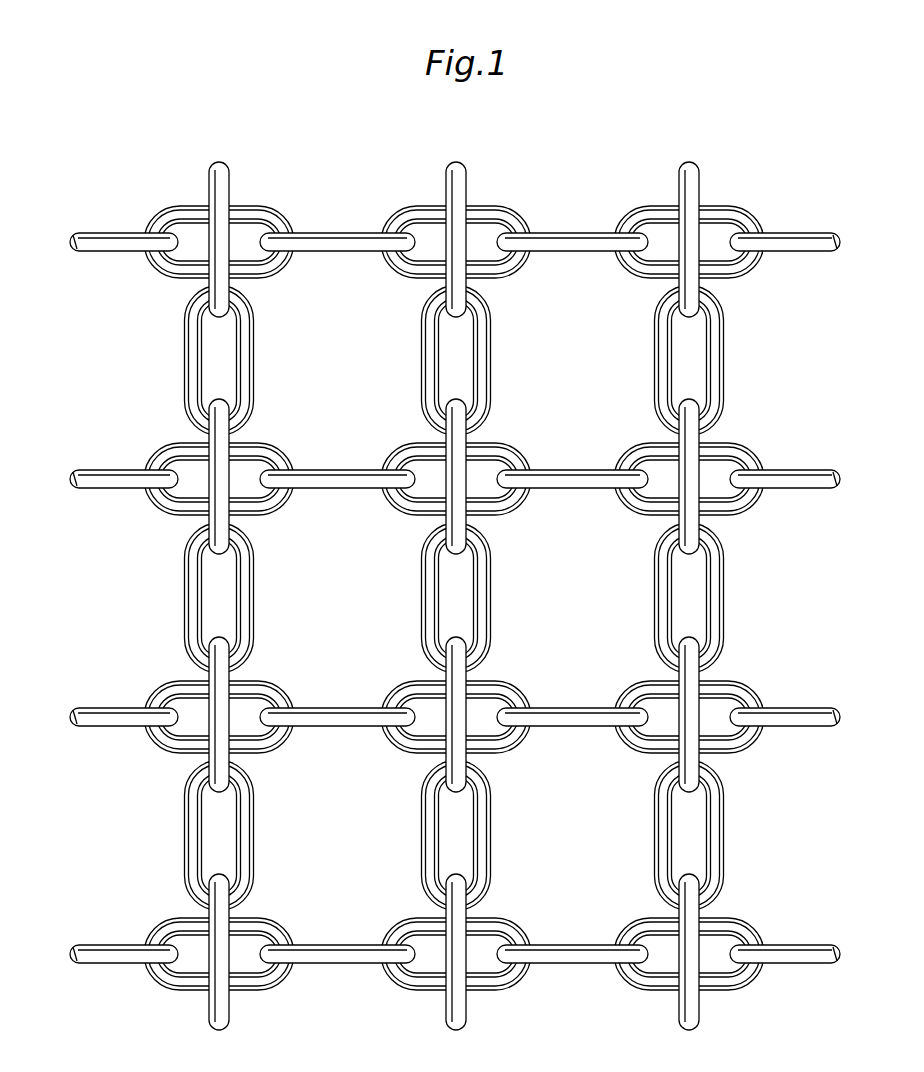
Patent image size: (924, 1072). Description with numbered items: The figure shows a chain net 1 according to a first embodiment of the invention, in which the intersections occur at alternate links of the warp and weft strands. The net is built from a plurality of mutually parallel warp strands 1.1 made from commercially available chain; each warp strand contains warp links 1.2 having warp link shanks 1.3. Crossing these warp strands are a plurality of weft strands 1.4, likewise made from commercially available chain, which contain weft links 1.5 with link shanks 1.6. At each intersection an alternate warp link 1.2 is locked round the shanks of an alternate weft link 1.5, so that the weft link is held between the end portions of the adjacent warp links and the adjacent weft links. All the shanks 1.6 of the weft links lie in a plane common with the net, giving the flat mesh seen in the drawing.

The chain net 1 is at (336, 214).
The warp strand 1.1 is at (467, 112).
The warp link 1.2 is at (490, 327).
The warp link shank 1.3 is at (427, 362).
The weft strand 1.4 is at (834, 226).
The weft link 1.5 is at (578, 472).
The link shank 1.6 is at (727, 452).